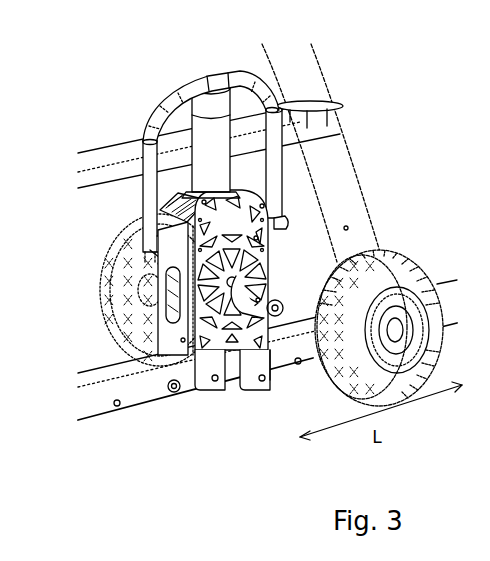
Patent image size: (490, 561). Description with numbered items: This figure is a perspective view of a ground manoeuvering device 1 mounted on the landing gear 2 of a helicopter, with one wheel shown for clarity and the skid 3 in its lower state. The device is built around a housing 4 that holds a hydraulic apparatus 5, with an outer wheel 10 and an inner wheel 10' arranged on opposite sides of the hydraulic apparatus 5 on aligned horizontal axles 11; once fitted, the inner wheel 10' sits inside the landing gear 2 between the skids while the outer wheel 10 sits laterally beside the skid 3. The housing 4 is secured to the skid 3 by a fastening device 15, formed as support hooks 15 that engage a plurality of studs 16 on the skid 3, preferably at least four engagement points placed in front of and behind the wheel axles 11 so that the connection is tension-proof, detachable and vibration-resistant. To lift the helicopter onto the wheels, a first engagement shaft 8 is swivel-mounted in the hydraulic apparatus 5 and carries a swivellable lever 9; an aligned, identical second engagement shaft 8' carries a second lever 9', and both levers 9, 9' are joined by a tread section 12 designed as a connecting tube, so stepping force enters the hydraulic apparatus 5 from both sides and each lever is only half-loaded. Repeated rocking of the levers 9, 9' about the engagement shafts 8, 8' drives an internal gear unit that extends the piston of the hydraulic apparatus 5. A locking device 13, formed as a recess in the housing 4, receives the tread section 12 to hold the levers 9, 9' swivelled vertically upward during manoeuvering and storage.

The ground manoeuvering device 1 is at (70, 212).
The landing gear 2 is at (304, 78).
The skid 3 is at (113, 405).
The housing 4 is at (258, 273).
The hydraulic apparatus 5 is at (122, 274).
The first engagement shaft 8 is at (126, 250).
The second engagement shaft 8' is at (331, 189).
The lever 9 is at (124, 201).
The lever 9' is at (324, 163).
The outer wheel 10 is at (361, 328).
The inner wheel 10' is at (142, 290).
The wheel axle 11 is at (263, 308).
The tread section 12 is at (203, 83).
The locking device 13 is at (215, 87).
The fastening device 15 is at (204, 378).
The stud 16 is at (174, 392).